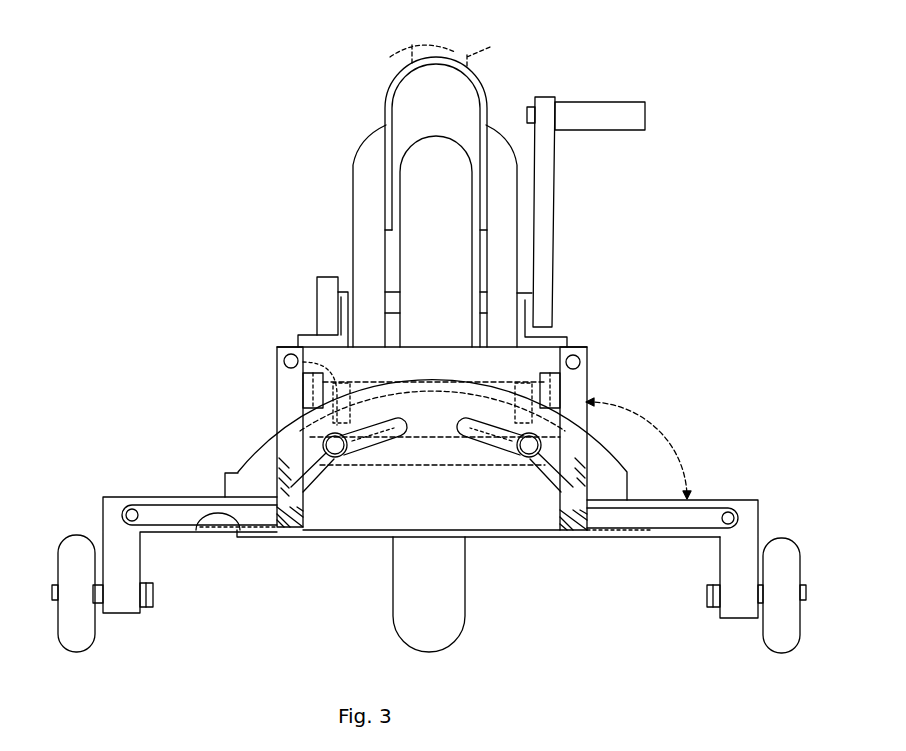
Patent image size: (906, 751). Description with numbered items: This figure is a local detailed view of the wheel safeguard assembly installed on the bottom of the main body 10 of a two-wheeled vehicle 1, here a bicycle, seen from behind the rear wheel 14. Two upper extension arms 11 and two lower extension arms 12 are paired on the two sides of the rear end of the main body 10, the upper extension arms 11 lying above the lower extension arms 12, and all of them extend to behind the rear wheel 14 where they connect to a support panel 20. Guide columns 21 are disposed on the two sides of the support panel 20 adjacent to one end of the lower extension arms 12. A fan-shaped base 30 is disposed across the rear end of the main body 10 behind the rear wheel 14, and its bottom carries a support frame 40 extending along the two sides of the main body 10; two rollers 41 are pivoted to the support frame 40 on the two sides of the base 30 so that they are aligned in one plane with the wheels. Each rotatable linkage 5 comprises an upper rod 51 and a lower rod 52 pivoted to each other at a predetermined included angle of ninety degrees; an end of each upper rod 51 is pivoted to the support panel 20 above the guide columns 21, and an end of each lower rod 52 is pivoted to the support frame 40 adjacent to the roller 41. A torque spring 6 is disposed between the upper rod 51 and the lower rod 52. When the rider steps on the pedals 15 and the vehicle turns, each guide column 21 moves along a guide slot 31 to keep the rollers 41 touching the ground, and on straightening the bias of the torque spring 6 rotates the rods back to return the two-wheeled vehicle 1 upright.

The two-wheeled vehicle 1 is at (346, 104).
The rotatable linkage 5 is at (273, 429).
The torque spring 6 is at (220, 516).
The main body 10 is at (367, 172).
The upper extension arm 11 is at (338, 322).
The lower extension arm 12 is at (283, 362).
The rear wheel 14 is at (417, 233).
The pedal 15 is at (612, 102).
The support panel 20 is at (540, 349).
The guide column 21 is at (322, 445).
The base 30 is at (492, 523).
The guide slot 31 is at (392, 440).
The support frame 40 is at (118, 527).
The roller 41 is at (82, 637).
The upper rod 51 is at (580, 392).
The lower rod 52 is at (708, 515).